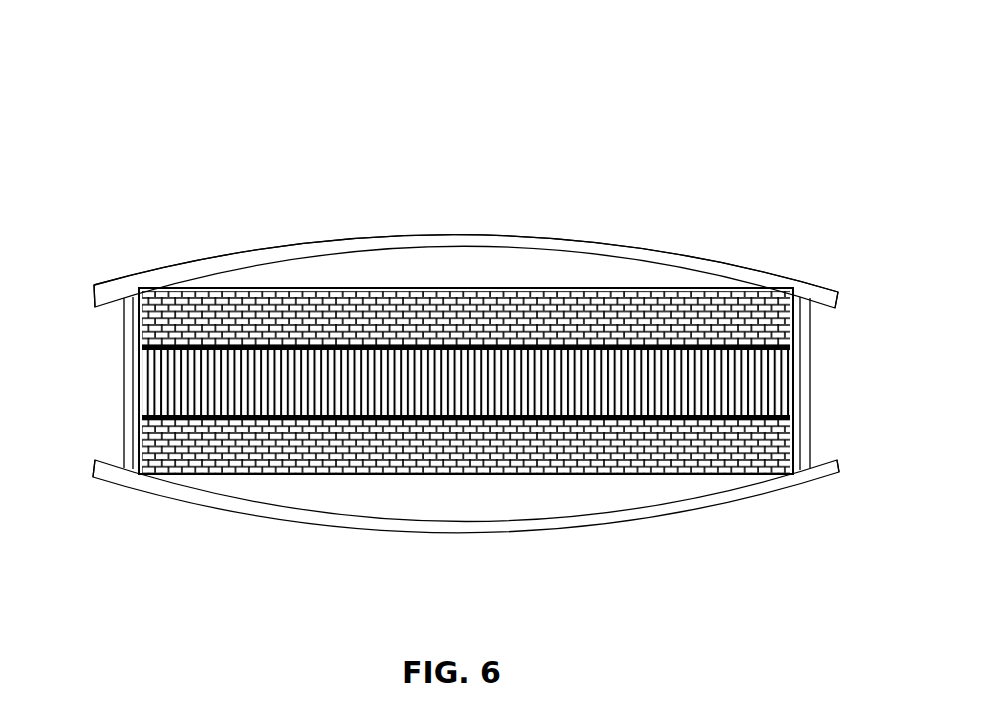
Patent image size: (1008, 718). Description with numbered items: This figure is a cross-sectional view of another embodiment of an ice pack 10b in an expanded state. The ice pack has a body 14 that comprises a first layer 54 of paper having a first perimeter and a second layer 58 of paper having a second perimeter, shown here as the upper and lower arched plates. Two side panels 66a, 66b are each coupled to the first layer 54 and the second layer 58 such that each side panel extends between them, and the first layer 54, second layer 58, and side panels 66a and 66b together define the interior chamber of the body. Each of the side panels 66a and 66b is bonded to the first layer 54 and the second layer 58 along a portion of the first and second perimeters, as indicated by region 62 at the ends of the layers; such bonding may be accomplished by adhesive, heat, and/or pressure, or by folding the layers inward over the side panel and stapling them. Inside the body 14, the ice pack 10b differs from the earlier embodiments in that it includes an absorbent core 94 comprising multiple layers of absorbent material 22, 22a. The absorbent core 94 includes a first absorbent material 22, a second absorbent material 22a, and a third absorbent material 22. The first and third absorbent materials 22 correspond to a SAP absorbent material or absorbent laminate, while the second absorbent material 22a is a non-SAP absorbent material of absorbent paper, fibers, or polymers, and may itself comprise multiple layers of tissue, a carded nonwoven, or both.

The ice pack 10b is at (104, 52).
The body 14 is at (473, 233).
The first absorbent material 22 is at (688, 290).
The second absorbent material 22a is at (790, 375).
The first layer 54 is at (250, 248).
The second layer 58 is at (205, 512).
The region 62 is at (838, 300).
The side panel 66a is at (810, 428).
The side panel 66b is at (123, 340).
The absorbent core 94 is at (327, 504).